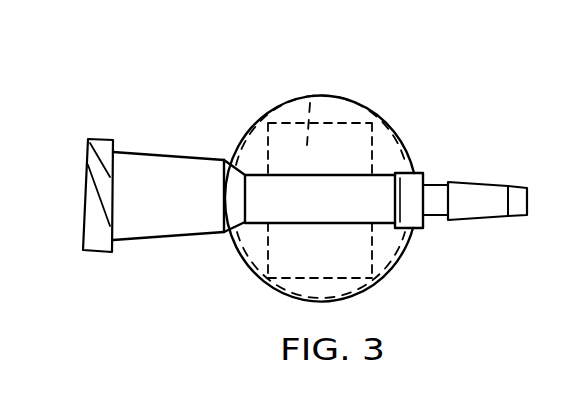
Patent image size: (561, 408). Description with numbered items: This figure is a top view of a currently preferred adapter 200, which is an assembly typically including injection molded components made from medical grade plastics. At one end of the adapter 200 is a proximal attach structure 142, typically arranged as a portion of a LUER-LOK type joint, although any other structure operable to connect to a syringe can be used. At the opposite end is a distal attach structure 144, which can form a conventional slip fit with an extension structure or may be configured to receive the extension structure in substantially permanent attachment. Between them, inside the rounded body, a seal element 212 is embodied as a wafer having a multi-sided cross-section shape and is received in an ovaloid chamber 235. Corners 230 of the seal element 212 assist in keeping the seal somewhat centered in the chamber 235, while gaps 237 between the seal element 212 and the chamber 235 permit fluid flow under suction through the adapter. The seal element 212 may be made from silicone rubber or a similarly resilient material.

The adapter 200 is at (437, 306).
The proximal attach structure 142 is at (124, 112).
The distal attach structure 144 is at (476, 146).
The seal element 212 is at (322, 92).
The gaps 237 is at (255, 154).
The corners 230 is at (265, 268).
The chamber 235 is at (386, 244).